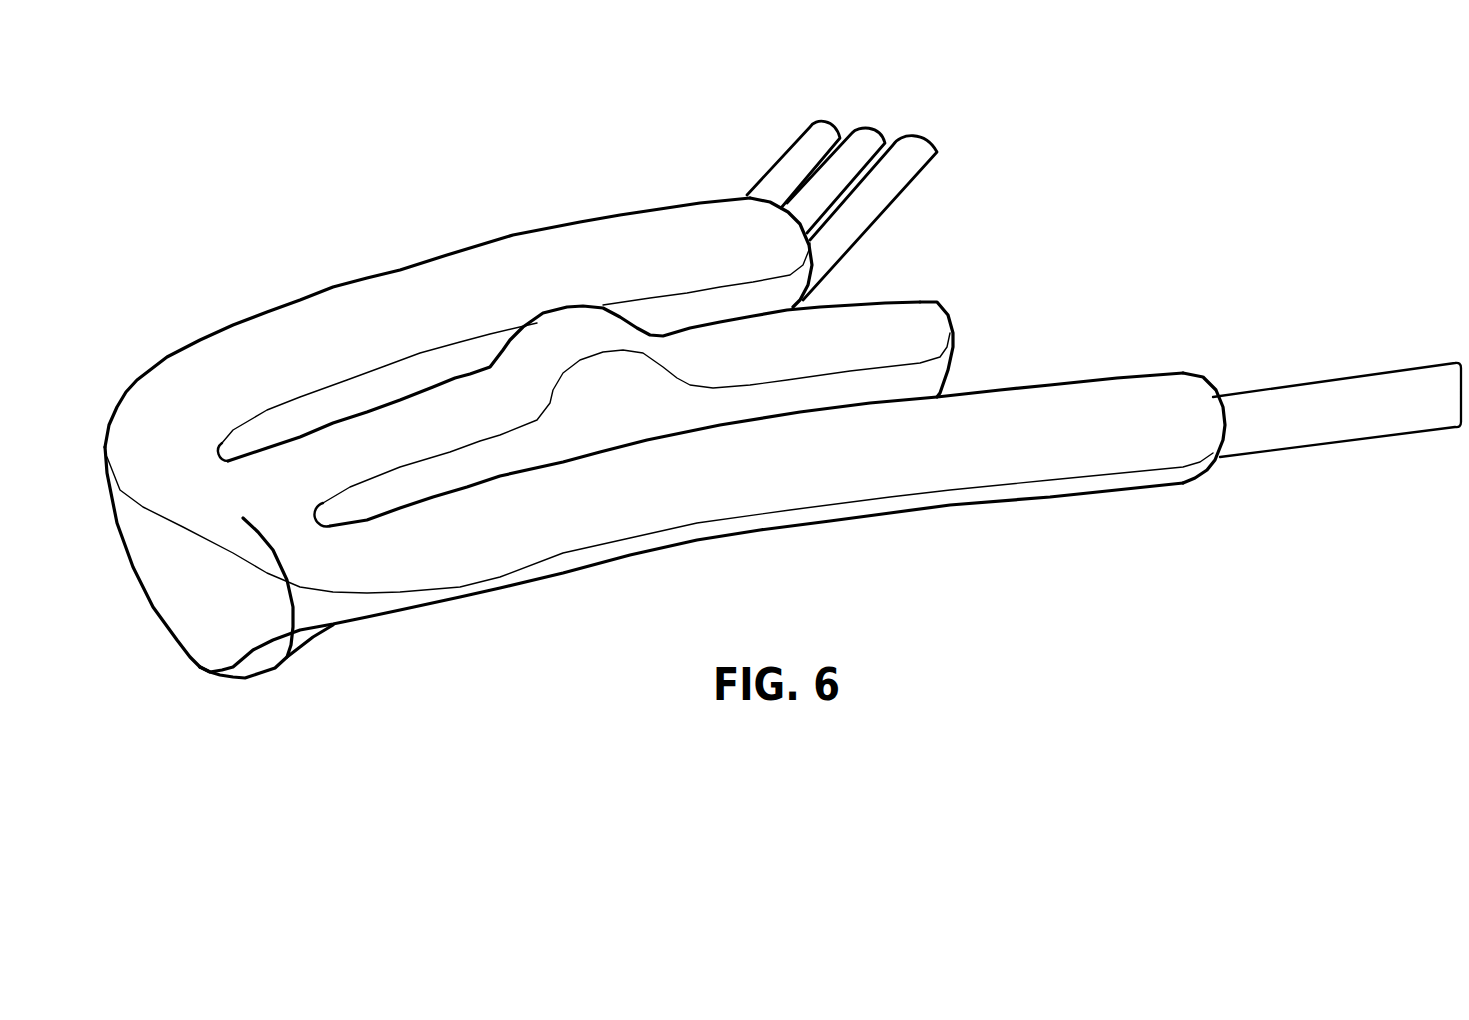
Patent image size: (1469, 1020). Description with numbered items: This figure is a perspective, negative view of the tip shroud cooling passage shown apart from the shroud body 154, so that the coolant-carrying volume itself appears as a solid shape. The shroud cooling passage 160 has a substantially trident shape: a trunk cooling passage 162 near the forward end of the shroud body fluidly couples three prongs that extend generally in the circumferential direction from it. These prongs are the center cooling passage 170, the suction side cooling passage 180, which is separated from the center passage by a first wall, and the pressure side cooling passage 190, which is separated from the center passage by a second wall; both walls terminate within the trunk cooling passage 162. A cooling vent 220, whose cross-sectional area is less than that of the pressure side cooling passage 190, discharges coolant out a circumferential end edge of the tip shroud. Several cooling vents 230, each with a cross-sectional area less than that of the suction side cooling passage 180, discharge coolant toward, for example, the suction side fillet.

The shroud body 154 is at (229, 295).
The shroud cooling passage 160 is at (545, 607).
The trunk cooling passage 162 is at (291, 645).
The center cooling passage 170 is at (465, 400).
The suction side cooling passage 180 is at (365, 300).
The pressure side cooling passage 190 is at (735, 483).
The cooling vent 220 is at (1300, 422).
The cooling vent 230 is at (893, 173).